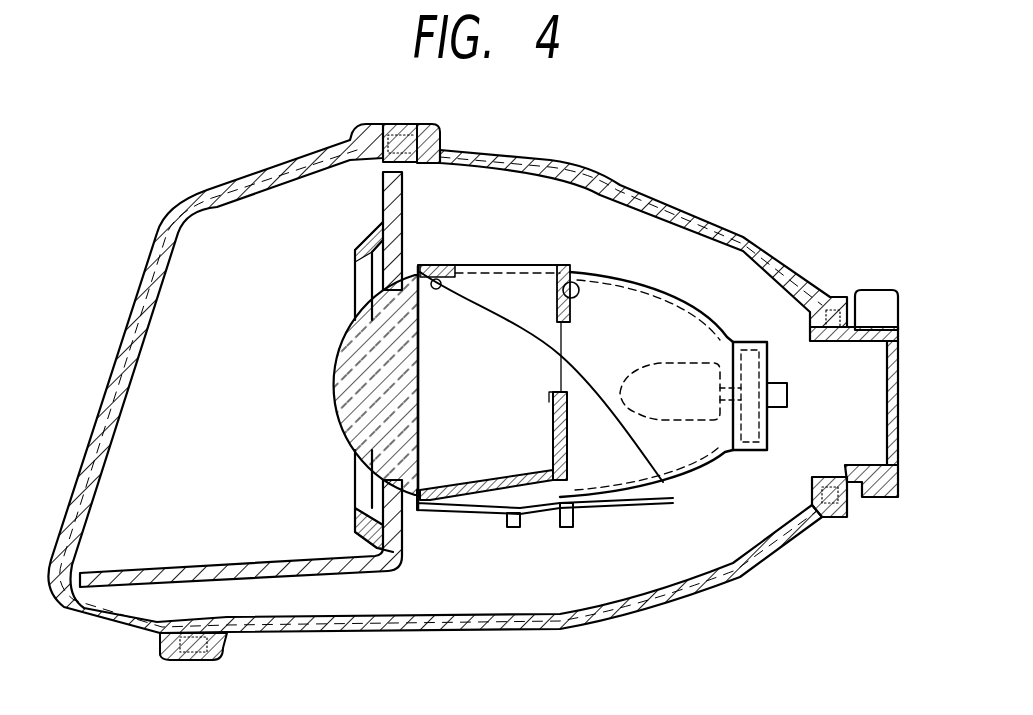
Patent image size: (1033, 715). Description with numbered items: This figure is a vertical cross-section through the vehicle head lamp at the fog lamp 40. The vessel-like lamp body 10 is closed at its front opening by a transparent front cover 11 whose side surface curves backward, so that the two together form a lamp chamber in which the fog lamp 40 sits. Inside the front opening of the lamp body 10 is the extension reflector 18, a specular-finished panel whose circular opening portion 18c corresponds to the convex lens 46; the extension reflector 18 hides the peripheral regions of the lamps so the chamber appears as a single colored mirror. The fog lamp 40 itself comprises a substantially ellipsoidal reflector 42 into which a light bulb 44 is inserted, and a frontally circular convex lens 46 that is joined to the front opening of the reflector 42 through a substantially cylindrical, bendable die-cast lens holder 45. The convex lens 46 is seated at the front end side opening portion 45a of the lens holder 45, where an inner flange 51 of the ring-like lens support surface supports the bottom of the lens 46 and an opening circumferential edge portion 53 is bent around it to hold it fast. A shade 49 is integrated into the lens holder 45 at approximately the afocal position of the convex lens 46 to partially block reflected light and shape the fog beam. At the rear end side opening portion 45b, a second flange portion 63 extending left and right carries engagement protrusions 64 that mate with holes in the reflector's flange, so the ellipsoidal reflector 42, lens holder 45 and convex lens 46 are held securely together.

The lamp body 10 is at (643, 197).
The front cover 11 is at (118, 353).
The extension reflector 18 is at (200, 555).
The circular opening portion 18c is at (357, 480).
The fog lamp 40 is at (528, 212).
The ellipsoidal reflector 42 is at (660, 285).
The light bulb 44 is at (690, 372).
The lens holder 45 is at (467, 263).
The front end side opening portion 45a is at (473, 416).
The rear end side opening portion 45b is at (550, 387).
The convex lens 46 is at (347, 334).
The shade 49 is at (567, 437).
The inner flange 51 is at (437, 267).
The opening circumferential edge portion 53 is at (408, 266).
The second flange portion 63 is at (557, 262).
The engagement protrusion 64 is at (582, 288).